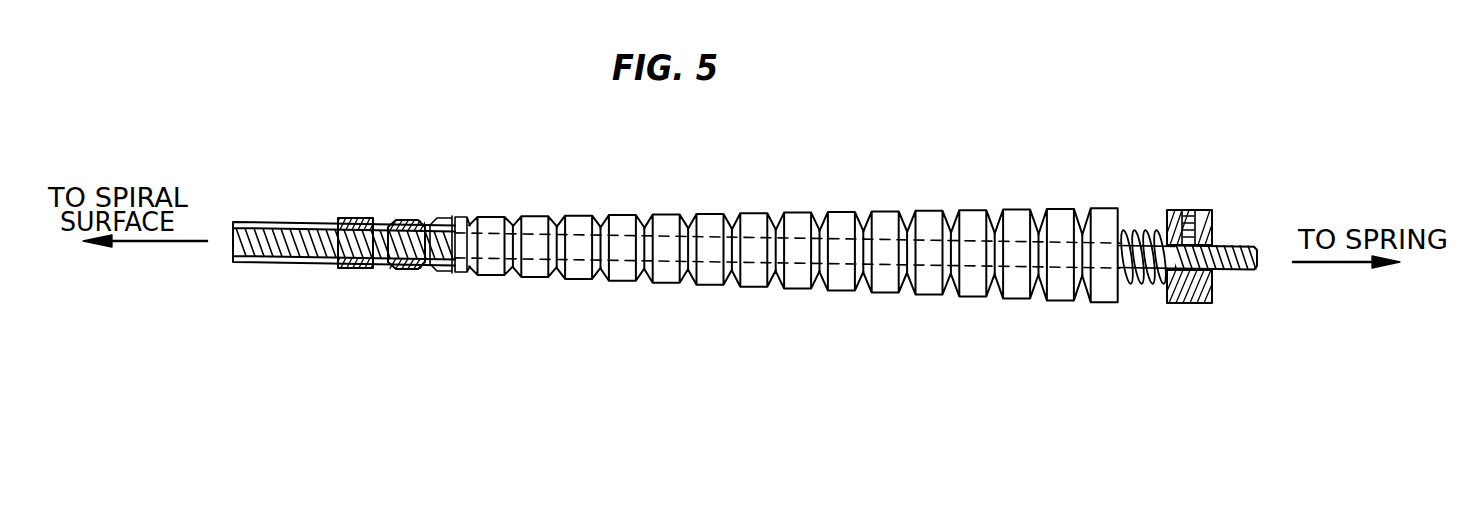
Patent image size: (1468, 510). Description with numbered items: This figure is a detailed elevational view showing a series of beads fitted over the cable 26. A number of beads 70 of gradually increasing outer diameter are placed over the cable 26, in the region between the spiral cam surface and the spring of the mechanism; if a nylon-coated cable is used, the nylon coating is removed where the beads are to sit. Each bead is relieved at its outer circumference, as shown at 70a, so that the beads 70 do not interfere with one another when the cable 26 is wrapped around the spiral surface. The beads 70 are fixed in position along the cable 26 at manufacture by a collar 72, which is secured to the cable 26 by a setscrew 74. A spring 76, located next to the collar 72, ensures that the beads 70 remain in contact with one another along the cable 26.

The cable 26 is at (360, 227).
The beads 70 is at (712, 212).
The relieved outer circumference of the beads 70a is at (962, 218).
The collar 72 is at (1188, 303).
The setscrew 74 is at (1185, 213).
The spring 76 is at (1140, 232).